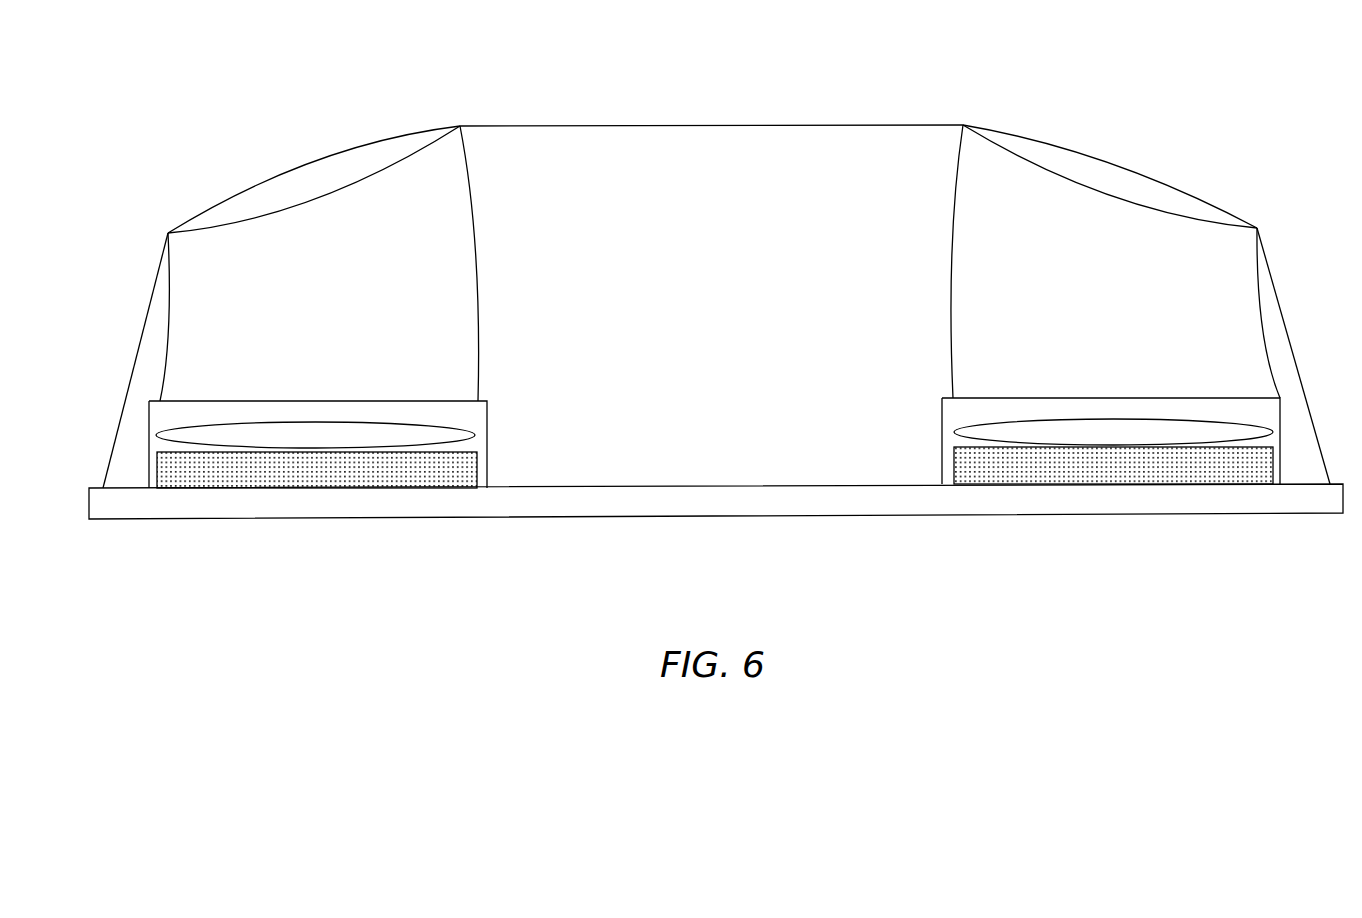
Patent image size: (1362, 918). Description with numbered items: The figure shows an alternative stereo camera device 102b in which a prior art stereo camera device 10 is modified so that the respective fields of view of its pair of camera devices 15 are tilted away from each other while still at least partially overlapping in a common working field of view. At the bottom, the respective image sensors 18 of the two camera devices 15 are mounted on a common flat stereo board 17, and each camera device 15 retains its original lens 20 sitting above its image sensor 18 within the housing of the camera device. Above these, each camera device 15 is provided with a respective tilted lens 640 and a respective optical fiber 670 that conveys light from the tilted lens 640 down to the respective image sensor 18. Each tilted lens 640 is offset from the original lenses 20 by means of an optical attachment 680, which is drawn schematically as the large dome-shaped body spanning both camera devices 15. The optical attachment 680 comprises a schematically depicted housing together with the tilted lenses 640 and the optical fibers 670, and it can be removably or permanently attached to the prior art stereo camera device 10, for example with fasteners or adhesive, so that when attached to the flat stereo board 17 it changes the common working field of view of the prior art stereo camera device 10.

The alternative stereo camera device 102b is at (1263, 103).
The stereo camera device 10 is at (523, 545).
The camera devices 15 is at (212, 425).
The flat stereo board 17 is at (715, 520).
The image sensor 18 is at (477, 463).
The lens 20 is at (474, 435).
The tilted lens 640 is at (310, 167).
The optical fiber 670 is at (478, 262).
The optical attachment 680 is at (734, 274).